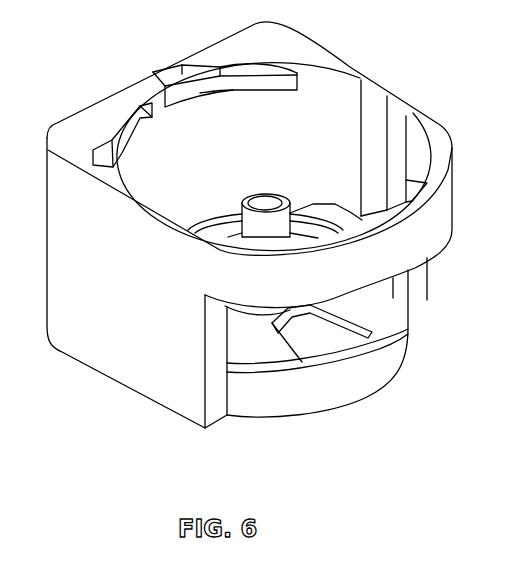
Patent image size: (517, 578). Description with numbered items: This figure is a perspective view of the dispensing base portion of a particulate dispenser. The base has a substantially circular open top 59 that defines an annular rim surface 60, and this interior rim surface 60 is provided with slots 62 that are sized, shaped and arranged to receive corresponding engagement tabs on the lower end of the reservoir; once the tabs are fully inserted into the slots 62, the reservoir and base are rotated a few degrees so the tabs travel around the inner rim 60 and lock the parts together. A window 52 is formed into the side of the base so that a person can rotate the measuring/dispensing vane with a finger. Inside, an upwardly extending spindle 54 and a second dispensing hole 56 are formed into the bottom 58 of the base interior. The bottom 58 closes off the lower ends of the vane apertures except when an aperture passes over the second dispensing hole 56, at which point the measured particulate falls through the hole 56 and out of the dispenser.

The window 52 is at (430, 393).
The spindle 54 is at (277, 194).
The second dispensing hole 56 is at (328, 343).
The bottom 58 is at (368, 322).
The open top 59 is at (327, 110).
The annular rim surface 60 is at (157, 84).
The slots 62 is at (503, 112).